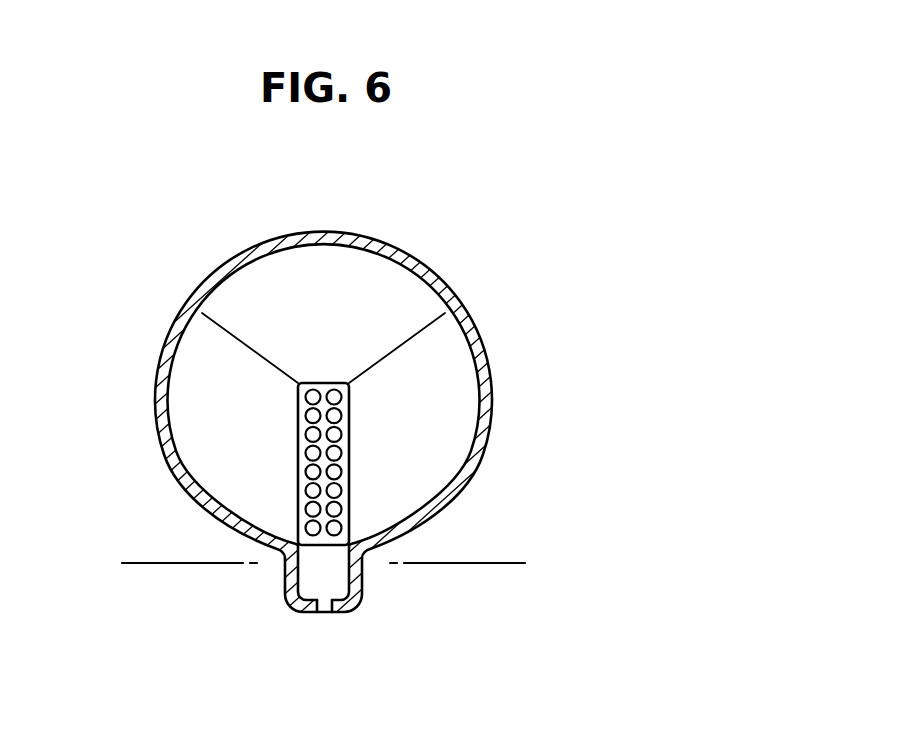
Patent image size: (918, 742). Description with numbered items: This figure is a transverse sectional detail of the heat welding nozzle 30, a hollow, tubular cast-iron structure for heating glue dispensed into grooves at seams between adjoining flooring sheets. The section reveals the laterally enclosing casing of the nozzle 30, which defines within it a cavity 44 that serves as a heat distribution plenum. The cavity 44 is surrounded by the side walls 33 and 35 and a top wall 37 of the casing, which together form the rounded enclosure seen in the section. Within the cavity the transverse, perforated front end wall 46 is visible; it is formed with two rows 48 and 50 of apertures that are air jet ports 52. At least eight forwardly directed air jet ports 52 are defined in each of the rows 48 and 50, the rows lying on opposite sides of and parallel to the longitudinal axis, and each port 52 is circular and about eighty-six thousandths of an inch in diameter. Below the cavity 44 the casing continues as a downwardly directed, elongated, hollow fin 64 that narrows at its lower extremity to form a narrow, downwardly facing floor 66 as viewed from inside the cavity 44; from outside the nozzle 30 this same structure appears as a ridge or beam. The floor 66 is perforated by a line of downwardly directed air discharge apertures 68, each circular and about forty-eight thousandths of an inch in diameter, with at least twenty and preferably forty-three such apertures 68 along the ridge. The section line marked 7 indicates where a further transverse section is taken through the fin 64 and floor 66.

The heat welding nozzle 30 is at (502, 272).
The side wall 33 is at (494, 389).
The side wall 35 is at (156, 398).
The top wall 37 is at (320, 231).
The cavity 44 is at (256, 452).
The front end wall 46 is at (349, 462).
The row of apertures 48 is at (310, 544).
The row of apertures 50 is at (337, 544).
The air jet ports 52 is at (335, 390).
The fin 64 is at (362, 573).
The floor 66 is at (342, 612).
The air discharge apertures 68 is at (321, 612).
The section line 7- 7 is at (518, 556).